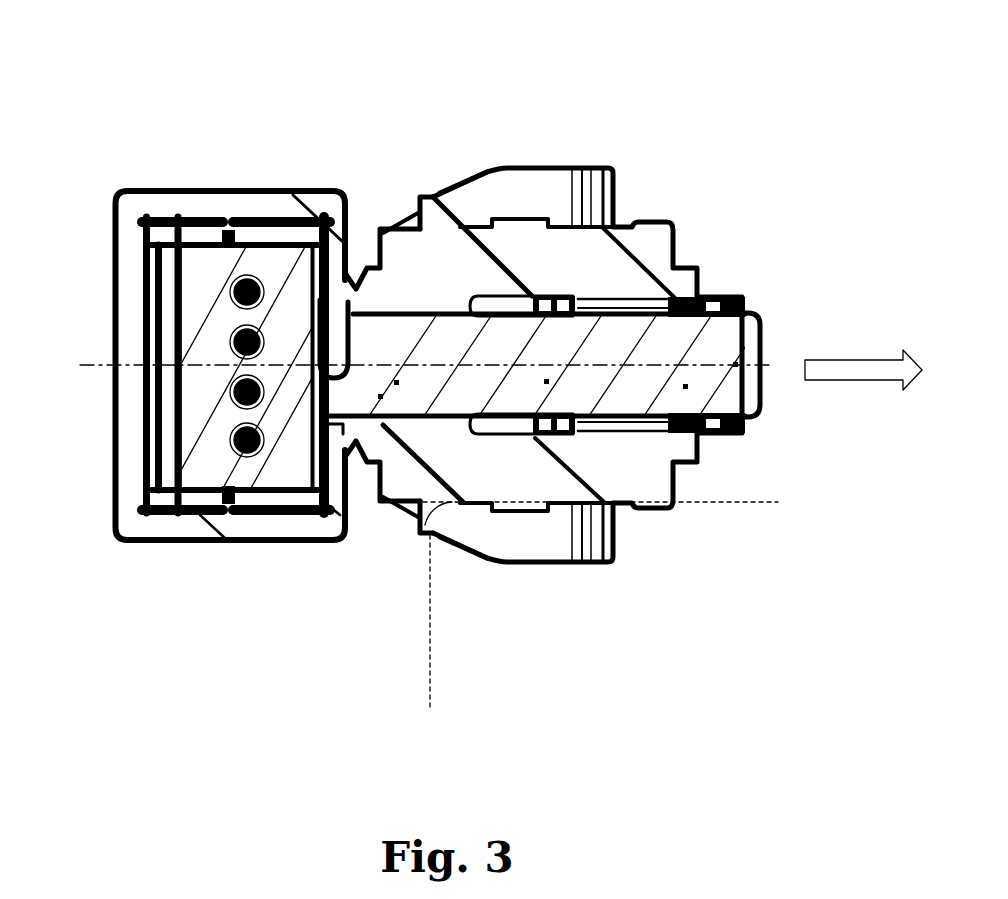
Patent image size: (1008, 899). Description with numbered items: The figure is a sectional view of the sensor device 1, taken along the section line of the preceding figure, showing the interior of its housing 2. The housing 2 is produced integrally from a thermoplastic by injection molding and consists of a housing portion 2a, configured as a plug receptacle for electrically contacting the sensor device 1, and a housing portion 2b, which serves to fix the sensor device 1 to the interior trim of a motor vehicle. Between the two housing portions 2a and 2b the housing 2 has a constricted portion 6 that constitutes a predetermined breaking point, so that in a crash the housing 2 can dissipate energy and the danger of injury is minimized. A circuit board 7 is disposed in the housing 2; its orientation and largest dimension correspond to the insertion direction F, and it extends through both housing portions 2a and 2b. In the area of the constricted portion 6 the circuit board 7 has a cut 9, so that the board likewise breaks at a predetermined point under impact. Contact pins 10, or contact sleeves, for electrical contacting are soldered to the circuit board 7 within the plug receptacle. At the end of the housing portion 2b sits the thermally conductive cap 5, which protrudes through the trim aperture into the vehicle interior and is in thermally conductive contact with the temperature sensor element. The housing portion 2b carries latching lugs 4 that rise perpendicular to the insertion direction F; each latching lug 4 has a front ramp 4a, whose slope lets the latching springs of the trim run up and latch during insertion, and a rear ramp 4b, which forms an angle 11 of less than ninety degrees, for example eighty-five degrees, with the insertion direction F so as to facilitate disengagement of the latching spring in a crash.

The sensor device 1 is at (713, 137).
The housing 2 is at (523, 240).
The housing portion 2a is at (134, 207).
The housing portion 2b is at (600, 260).
The latching lug 4 is at (433, 197).
The front ramp 4a is at (452, 205).
The rear ramp 4b is at (410, 204).
The thermally conductive cap 5 is at (752, 315).
The constricted portion 6 is at (353, 280).
The circuit board 7 is at (497, 337).
The cut 9 is at (336, 386).
The contact pins 10 is at (232, 292).
The angle 11 is at (444, 530).